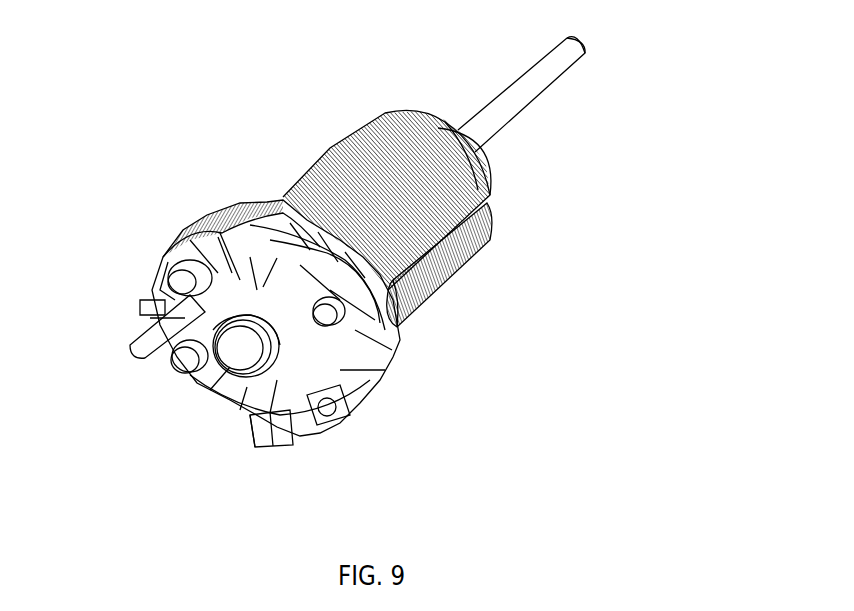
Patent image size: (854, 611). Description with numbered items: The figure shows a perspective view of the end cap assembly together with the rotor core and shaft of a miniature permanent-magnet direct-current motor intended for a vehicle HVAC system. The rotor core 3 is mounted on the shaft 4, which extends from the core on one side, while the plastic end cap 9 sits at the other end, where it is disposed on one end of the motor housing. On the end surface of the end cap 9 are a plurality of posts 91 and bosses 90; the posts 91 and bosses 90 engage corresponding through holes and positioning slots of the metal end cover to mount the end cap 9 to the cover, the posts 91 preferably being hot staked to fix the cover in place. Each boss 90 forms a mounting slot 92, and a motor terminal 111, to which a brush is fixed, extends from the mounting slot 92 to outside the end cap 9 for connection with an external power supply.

The rotor core 3 is at (483, 183).
The shaft 4 is at (548, 67).
The end cap 9 is at (227, 387).
The boss 90 is at (150, 300).
The post 91 is at (167, 278).
The mounting slot 92 is at (340, 405).
The motor terminal 111 is at (303, 398).